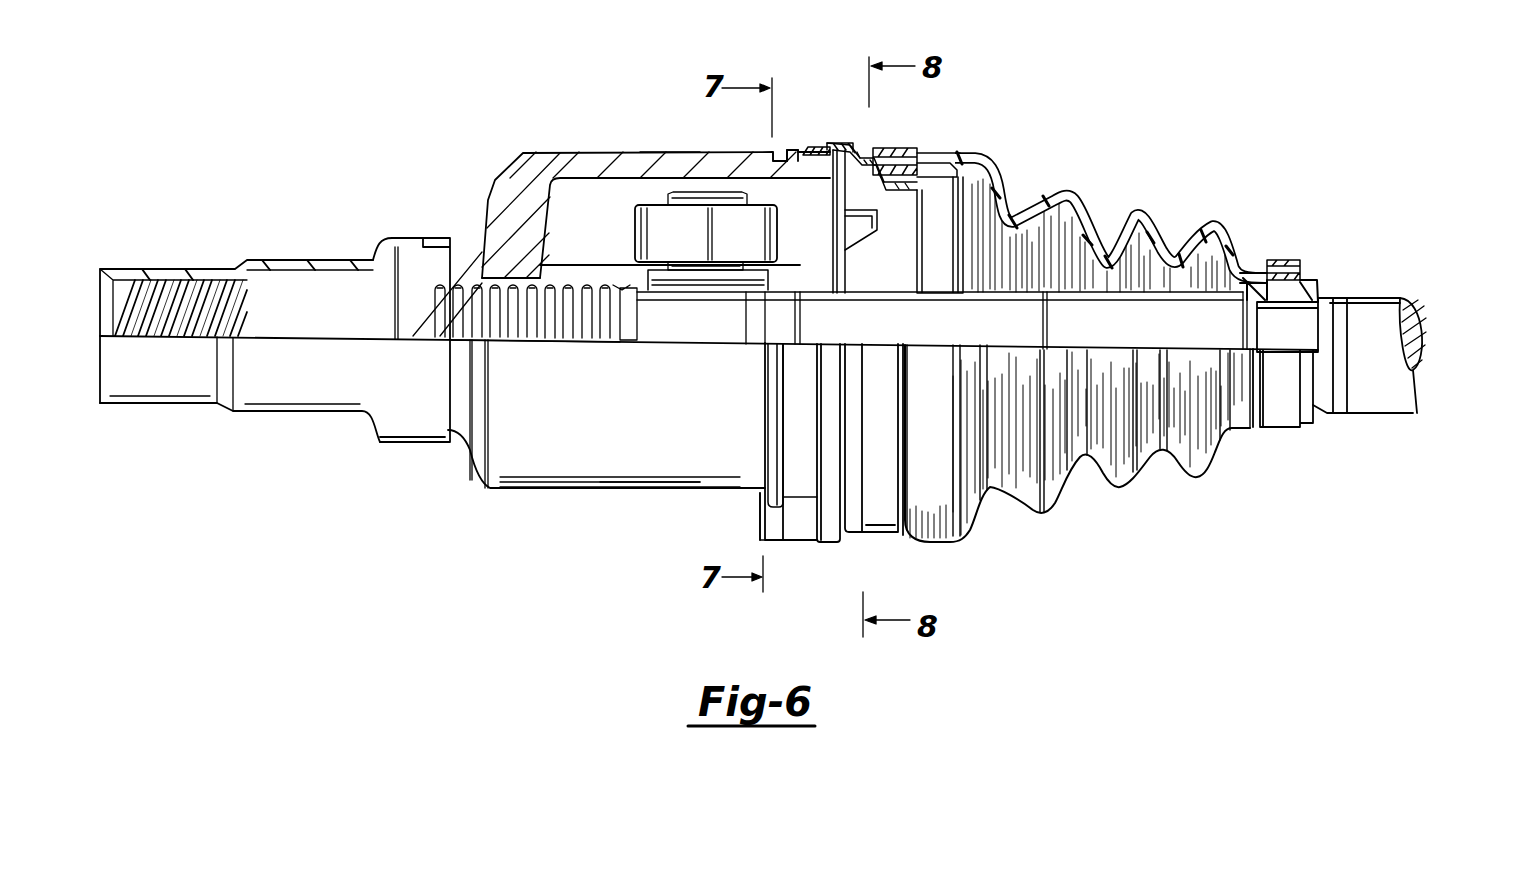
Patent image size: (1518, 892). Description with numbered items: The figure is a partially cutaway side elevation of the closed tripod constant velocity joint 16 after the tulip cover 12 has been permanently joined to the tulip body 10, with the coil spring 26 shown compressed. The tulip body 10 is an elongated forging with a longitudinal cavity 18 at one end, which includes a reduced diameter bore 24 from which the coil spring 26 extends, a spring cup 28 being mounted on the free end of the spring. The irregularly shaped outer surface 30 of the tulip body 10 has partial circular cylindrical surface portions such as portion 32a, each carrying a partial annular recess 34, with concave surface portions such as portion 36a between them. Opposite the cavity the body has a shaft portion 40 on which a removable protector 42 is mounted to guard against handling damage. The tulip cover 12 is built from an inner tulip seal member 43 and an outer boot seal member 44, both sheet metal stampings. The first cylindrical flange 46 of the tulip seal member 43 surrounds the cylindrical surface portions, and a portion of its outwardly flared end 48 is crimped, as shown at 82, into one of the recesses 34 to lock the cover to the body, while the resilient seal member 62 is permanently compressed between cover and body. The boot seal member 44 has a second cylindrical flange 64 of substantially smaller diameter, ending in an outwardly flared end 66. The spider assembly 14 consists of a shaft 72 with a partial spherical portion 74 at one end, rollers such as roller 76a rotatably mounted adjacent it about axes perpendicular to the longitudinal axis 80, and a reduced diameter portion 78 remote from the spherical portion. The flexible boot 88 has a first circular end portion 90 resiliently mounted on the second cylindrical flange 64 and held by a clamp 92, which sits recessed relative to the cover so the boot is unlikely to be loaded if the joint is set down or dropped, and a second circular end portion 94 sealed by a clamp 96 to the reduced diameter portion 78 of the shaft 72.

The tulip body 10 is at (574, 124).
The tulip cover 12 is at (810, 323).
The spider assembly 14 is at (699, 241).
The closed tripod constant velocity joint 16 is at (1072, 108).
The longitudinal cavity 18 is at (587, 192).
The reduced diameter bore 24 is at (480, 285).
The coil spring 26 is at (416, 320).
The spring cup 28 is at (574, 338).
The outer surface 30 is at (580, 468).
The partial circular cylindrical surface portion 32a is at (668, 152).
The partial annular recess 34 is at (772, 148).
The concave surface portion 36a is at (637, 494).
The shaft portion 40 is at (205, 288).
The protector 42 is at (262, 397).
The tulip seal member 43 is at (803, 518).
The boot seal member 44 is at (830, 541).
The first cylindrical flange 46 is at (808, 148).
The outwardly flared end 48 is at (769, 540).
The resilient seal member 62 is at (852, 146).
The second cylindrical flange 64 is at (897, 192).
The outwardly flared end 66 is at (920, 193).
The shaft 72 is at (1004, 292).
The partial spherical portion 74 is at (606, 338).
The roller 76a is at (633, 232).
The reduced diameter portion 78 is at (1300, 346).
The longitudinal axis 80 is at (1432, 354).
The crimping 82 is at (787, 150).
The boot 88 is at (1000, 180).
The first circular end portion 90 is at (922, 153).
The clamp 92 is at (892, 149).
The second circular end portion 94 is at (1300, 280).
The clamp 96 is at (1298, 234).